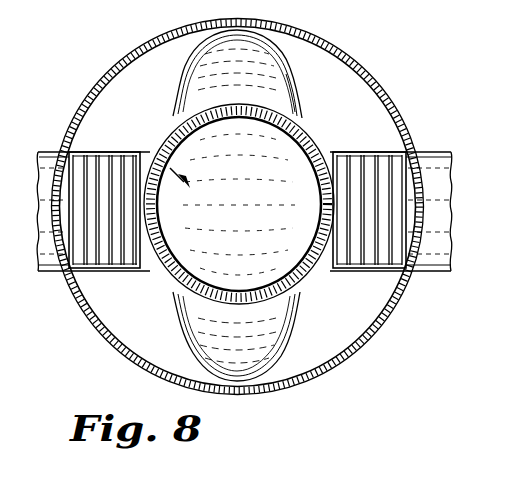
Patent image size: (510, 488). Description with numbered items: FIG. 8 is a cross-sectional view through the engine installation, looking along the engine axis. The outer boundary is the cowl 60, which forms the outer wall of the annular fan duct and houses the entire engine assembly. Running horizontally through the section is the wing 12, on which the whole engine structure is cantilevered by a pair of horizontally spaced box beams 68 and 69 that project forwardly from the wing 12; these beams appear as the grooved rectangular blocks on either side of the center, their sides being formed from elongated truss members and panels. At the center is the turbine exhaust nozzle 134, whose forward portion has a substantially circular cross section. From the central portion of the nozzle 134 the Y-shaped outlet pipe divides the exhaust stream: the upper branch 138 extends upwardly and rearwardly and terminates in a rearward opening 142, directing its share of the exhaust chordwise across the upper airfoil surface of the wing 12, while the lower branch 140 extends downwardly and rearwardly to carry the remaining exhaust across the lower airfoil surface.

The wing 12 is at (430, 148).
The cowl 60 is at (332, 366).
The box beam 68 is at (370, 262).
The box beam 69 is at (108, 262).
The turbine exhaust nozzle 134 is at (168, 135).
The upper branch of the Y-shaped outlet pipe 138 is at (270, 38).
The lower branch of the Y-shaped outlet pipe 140 is at (275, 372).
The rearward opening 142 is at (290, 96).